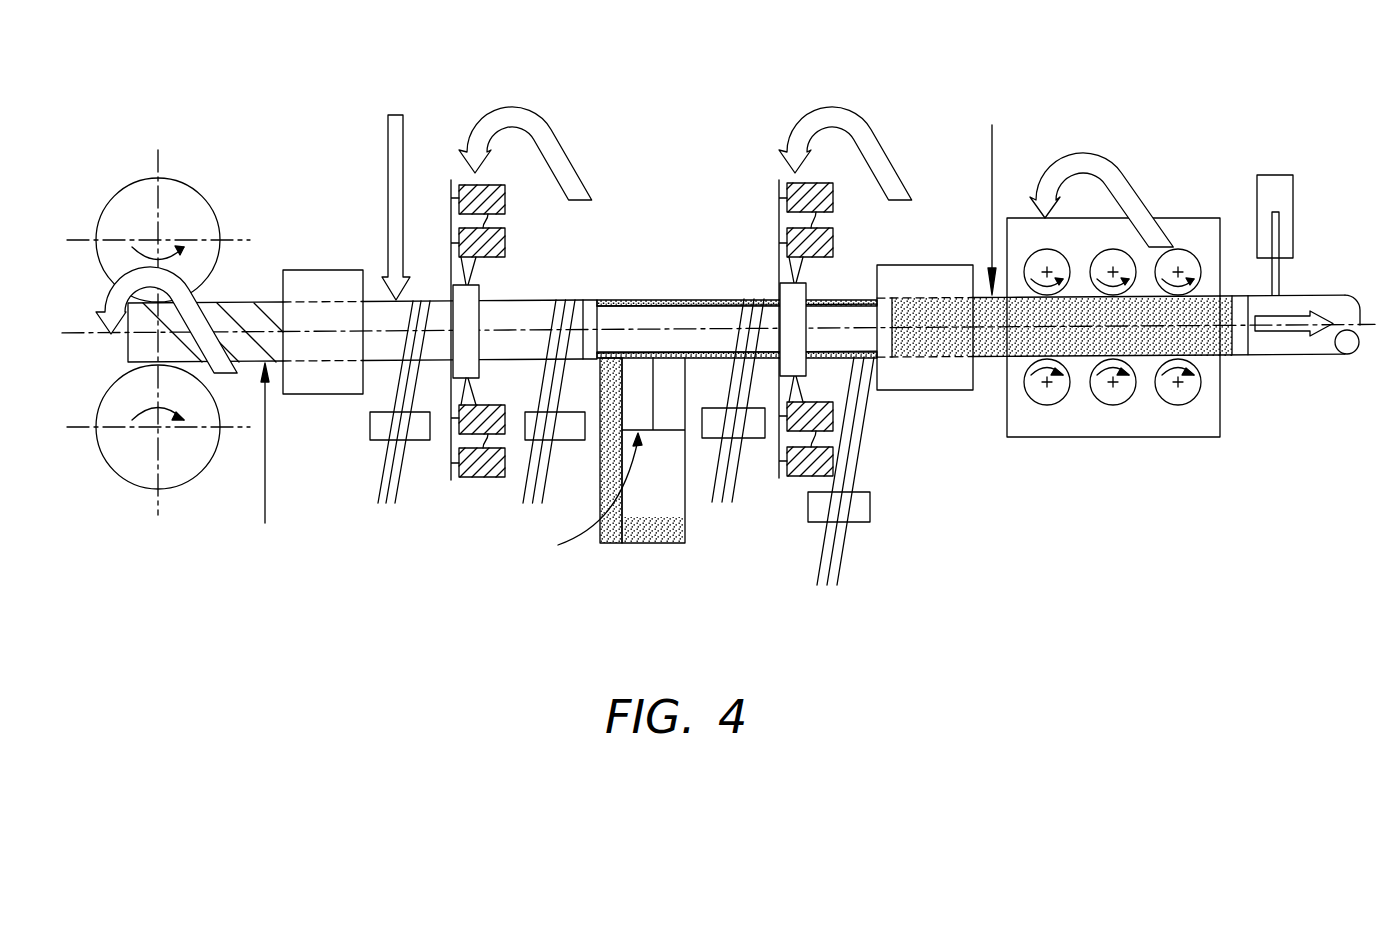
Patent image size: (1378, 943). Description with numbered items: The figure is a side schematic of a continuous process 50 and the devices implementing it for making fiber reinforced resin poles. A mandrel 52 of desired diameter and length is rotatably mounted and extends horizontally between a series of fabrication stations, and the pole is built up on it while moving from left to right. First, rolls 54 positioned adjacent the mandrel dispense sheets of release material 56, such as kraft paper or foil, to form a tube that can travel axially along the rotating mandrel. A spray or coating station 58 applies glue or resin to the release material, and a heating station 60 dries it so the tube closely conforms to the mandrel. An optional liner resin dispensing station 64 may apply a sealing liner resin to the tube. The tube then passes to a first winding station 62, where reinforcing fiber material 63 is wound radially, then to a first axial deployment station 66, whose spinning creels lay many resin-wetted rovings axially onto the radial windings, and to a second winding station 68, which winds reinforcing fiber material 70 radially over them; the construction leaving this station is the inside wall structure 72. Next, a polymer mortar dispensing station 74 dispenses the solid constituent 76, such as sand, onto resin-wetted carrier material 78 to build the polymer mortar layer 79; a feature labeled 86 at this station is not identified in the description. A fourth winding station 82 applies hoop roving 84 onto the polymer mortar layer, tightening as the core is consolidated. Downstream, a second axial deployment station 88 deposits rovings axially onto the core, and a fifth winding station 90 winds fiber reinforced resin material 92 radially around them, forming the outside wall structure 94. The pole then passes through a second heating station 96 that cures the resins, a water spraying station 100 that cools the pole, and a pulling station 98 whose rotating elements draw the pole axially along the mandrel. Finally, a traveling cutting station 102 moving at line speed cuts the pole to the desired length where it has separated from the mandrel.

The continuous process 50 is at (658, 127).
The mandrel 52 is at (647, 318).
The rolls 54 is at (182, 195).
The release material 56 is at (240, 315).
The coating station 58 is at (267, 459).
The heating station 60 is at (330, 382).
The first winding station 62 is at (377, 437).
The reinforcing fiber material 63 is at (395, 497).
The liner resin dispensing station 64 is at (387, 156).
The first axial deployment station 66 is at (510, 237).
The second winding station 68 is at (563, 433).
The reinforcing fiber material 70 is at (527, 467).
The inside wall structure 72 is at (590, 300).
The polymer mortar dispensing station 74 is at (654, 550).
The solid constituent 76 is at (680, 522).
The carrier material 78 is at (612, 543).
The polymer mortar layer 79 is at (708, 297).
The fourth winding station 82 is at (755, 432).
The hoop roving 84 is at (722, 497).
The vapor flow arrow 86 is at (585, 497).
The second axial deployment station 88 is at (838, 237).
The fifth winding station 90 is at (863, 505).
The fiber reinforced resin material 92 is at (837, 562).
The outside wall structure 94 is at (850, 298).
The heating station 96 is at (925, 378).
The pulling station 98 is at (1187, 230).
The water spraying station 100 is at (992, 147).
The traveling cutting station 102 is at (1282, 193).